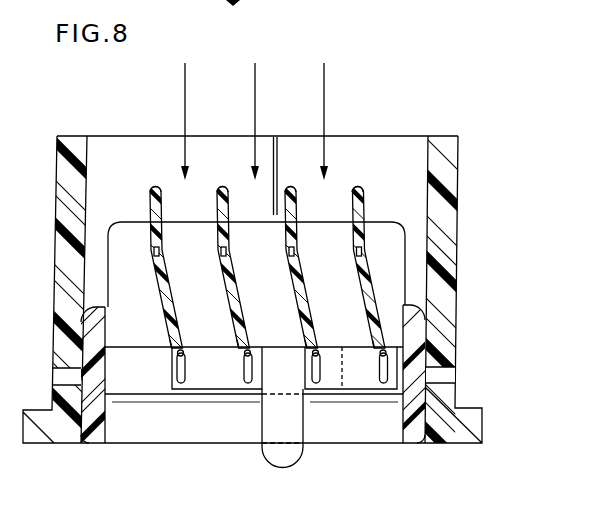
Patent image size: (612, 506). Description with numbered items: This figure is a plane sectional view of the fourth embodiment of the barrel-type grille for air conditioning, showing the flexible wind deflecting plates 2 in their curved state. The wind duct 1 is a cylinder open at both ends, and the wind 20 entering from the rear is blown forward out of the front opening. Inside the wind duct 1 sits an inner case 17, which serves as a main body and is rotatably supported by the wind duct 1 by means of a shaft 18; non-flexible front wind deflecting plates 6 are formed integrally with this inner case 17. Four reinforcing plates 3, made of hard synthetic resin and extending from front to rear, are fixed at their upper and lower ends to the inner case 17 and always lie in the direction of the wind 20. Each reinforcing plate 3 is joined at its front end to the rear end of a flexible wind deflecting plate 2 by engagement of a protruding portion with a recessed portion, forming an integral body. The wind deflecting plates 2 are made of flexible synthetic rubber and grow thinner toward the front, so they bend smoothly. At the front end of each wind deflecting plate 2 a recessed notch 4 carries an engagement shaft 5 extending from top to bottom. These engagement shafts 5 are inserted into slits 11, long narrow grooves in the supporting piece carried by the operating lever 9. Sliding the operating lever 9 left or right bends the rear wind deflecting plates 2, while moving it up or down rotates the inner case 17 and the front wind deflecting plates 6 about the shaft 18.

The wind duct 1 is at (458, 212).
The wind deflecting plate 2 is at (159, 289).
The reinforcing plate 3 is at (216, 207).
The recessed notch 4 is at (170, 350).
The engagement shaft 5 is at (182, 350).
The wind deflecting plate 6 is at (352, 428).
The operating lever 9 is at (262, 460).
The slit 11 is at (177, 368).
The inner case 17 is at (414, 432).
The shaft 18 is at (456, 376).
The wind 20 is at (185, 84).